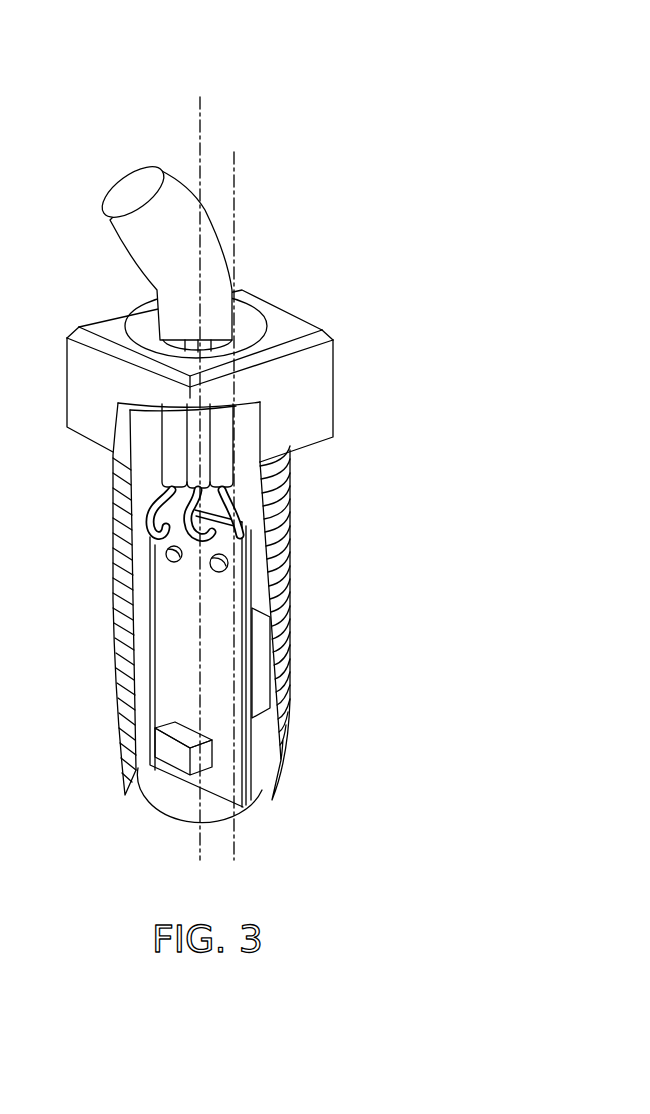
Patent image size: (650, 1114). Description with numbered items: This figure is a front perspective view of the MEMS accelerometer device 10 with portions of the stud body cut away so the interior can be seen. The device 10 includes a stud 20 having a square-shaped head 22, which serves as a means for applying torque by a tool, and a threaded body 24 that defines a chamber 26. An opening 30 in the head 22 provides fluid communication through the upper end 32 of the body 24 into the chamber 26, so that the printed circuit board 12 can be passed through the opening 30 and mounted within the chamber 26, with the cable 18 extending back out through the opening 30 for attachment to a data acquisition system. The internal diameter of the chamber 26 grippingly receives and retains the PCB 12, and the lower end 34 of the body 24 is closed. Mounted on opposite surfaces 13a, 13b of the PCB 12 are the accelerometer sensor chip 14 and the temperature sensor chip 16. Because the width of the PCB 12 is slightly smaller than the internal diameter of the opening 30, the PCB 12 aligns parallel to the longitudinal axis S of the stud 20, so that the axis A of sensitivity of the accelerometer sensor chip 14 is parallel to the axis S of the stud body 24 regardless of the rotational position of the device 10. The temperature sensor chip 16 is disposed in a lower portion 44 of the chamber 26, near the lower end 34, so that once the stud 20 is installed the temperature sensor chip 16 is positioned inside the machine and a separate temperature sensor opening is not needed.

The MEMS accelerometer device 10 is at (322, 60).
The printed circuit board 12 is at (163, 628).
The surface of the PCB 13a is at (162, 692).
The surface of the PCB 13b is at (285, 588).
The accelerometer sensor chip 14 is at (260, 668).
The temperature sensor chip 16 is at (162, 750).
The cable 18 is at (210, 255).
The stud 20 is at (260, 572).
The square-shaped head 22 is at (318, 385).
The threaded body 24 is at (287, 727).
The chamber 26 is at (123, 495).
The opening 30 is at (145, 320).
The upper end 32 is at (290, 467).
The lower end 34 is at (280, 797).
The lower portion 44 is at (142, 728).
The longitudinal axis S is at (203, 142).
The axis of sensitivity A is at (237, 173).